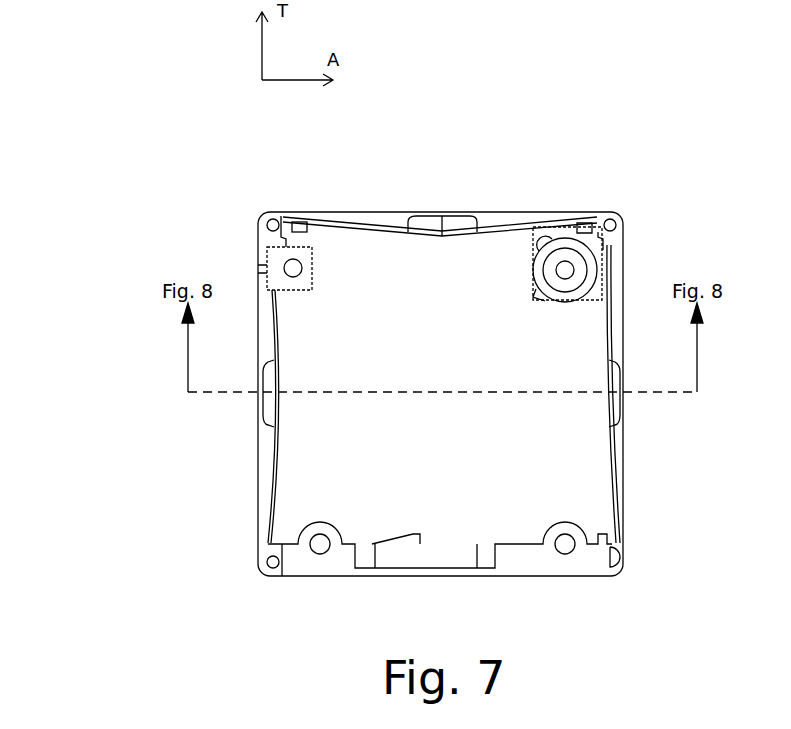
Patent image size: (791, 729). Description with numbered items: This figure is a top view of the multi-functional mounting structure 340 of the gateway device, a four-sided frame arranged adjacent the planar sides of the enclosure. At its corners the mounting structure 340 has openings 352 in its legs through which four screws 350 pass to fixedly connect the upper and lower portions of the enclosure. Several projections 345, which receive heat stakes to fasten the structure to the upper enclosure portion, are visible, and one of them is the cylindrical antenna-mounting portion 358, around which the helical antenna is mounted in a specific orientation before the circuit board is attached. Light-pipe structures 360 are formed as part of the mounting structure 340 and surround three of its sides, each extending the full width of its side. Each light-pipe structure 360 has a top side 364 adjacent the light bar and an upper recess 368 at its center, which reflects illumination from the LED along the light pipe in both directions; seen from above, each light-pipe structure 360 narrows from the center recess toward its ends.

The multi-functional mounting structure 340 is at (124, 394).
The projections 345 is at (258, 258).
The screws 350 is at (627, 480).
The openings 352 is at (267, 212).
The cylindrical antenna-mounting portion 358 is at (565, 240).
The light-pipe structures 360 is at (498, 210).
The top side 364 is at (387, 220).
The upper recess 368 is at (445, 230).